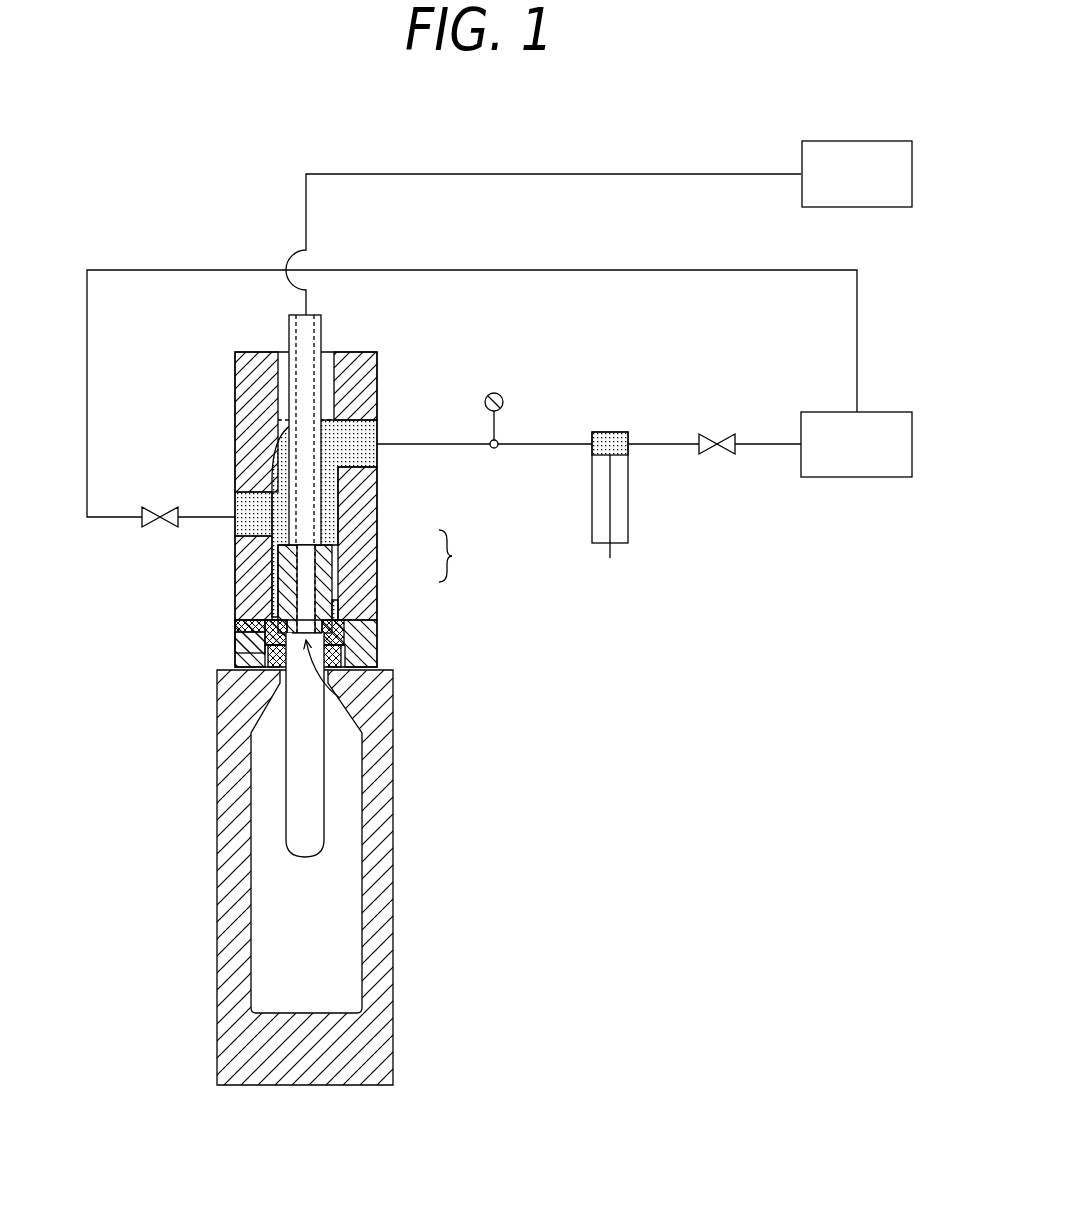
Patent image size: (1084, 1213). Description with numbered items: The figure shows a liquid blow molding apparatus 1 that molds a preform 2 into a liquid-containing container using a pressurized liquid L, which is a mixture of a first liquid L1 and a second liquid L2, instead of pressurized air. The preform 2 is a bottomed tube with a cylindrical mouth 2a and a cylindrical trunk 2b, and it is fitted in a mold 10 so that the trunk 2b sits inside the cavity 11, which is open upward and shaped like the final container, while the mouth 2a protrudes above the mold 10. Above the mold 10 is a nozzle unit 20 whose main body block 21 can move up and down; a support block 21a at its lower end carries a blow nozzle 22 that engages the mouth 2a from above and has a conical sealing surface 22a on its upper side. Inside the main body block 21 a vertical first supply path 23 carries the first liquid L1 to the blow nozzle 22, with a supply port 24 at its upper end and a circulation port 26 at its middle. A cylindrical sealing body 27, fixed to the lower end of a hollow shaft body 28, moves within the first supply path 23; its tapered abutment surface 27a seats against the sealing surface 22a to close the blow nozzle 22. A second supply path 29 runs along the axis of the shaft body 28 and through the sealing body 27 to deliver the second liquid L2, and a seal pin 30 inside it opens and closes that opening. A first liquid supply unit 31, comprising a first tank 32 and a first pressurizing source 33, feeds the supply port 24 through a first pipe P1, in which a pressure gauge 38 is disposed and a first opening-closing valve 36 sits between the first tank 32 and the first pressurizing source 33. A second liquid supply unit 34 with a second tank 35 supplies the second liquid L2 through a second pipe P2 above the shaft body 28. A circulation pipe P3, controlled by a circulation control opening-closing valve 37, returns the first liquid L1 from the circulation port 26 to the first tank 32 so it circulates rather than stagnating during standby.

The liquid blow molding apparatus 1 is at (216, 165).
The preform 2 is at (329, 771).
The mouth 2a is at (262, 660).
The trunk 2b is at (325, 808).
The mold 10 is at (396, 908).
The cavity 11 is at (330, 961).
The nozzle unit 20 is at (382, 375).
The main body block 21 is at (250, 390).
The support block 21a is at (257, 645).
The blow nozzle 22 is at (349, 632).
The sealing surface 22a is at (270, 600).
The first supply path 23 is at (345, 497).
The supply port 24 is at (373, 433).
The circulation port 26 is at (238, 500).
The sealing body 27 is at (280, 558).
The abutment surface 27a is at (262, 628).
The shaft body 28 is at (290, 325).
The second supply path 29 is at (338, 615).
The seal pin 30 is at (340, 688).
The first liquid supply unit 31 is at (699, 392).
The first tank 32 is at (856, 444).
The first pressurizing source 33 is at (628, 483).
The second liquid supply unit 34 is at (689, 133).
The second tank 35 is at (857, 174).
The first opening-closing valve 36 is at (722, 456).
The circulation control opening-closing valve 37 is at (150, 507).
The pressure gauge 38 is at (494, 393).
The first pipe P1 is at (541, 444).
The second pipe P2 is at (509, 174).
The circulation pipe P3 is at (509, 270).
The liquid L is at (455, 556).
The first liquid L1 is at (345, 528).
The second liquid L2 is at (328, 562).